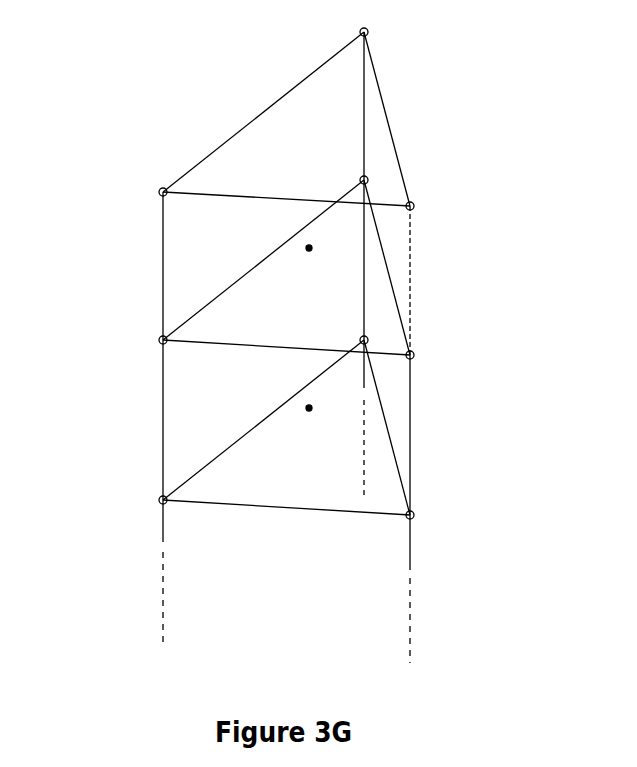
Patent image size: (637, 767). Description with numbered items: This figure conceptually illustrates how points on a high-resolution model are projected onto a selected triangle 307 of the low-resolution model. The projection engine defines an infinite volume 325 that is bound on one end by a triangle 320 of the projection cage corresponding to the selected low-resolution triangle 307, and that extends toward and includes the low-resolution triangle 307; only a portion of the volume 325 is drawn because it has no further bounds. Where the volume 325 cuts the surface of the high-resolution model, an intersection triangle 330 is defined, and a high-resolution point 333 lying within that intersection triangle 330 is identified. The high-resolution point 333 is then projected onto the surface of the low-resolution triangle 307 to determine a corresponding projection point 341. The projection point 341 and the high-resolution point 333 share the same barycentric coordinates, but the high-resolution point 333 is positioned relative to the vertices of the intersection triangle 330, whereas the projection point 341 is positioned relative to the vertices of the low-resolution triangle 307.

The triangle of the projection cage 320 is at (383, 97).
The volume 325 is at (163, 252).
The intersection triangle 330 is at (198, 308).
The high-resolution point 333 is at (309, 248).
The projection point 341 is at (309, 408).
The low-resolution triangle 307 is at (202, 470).